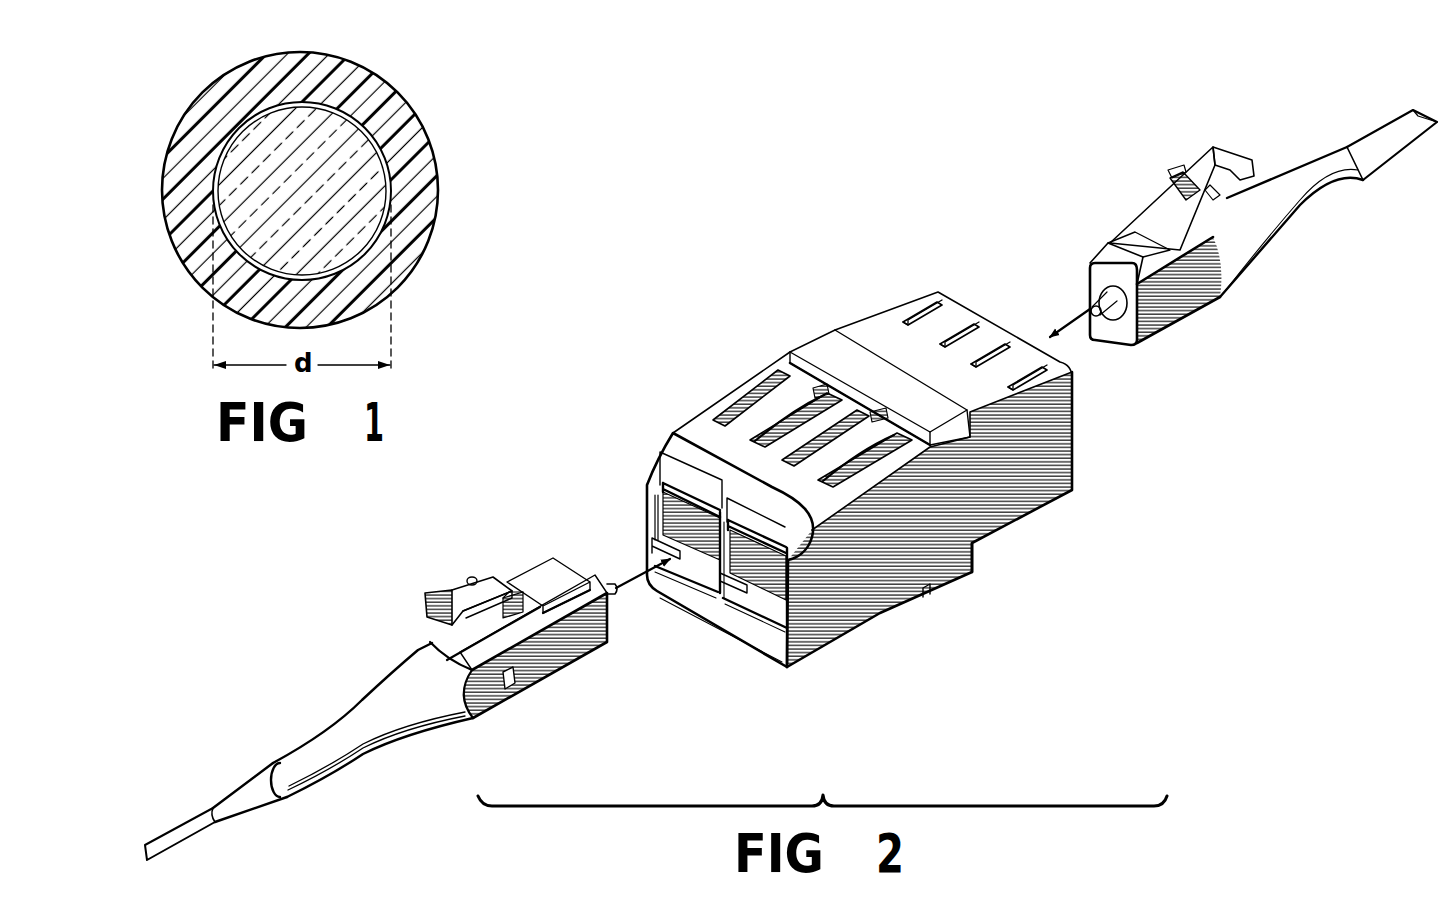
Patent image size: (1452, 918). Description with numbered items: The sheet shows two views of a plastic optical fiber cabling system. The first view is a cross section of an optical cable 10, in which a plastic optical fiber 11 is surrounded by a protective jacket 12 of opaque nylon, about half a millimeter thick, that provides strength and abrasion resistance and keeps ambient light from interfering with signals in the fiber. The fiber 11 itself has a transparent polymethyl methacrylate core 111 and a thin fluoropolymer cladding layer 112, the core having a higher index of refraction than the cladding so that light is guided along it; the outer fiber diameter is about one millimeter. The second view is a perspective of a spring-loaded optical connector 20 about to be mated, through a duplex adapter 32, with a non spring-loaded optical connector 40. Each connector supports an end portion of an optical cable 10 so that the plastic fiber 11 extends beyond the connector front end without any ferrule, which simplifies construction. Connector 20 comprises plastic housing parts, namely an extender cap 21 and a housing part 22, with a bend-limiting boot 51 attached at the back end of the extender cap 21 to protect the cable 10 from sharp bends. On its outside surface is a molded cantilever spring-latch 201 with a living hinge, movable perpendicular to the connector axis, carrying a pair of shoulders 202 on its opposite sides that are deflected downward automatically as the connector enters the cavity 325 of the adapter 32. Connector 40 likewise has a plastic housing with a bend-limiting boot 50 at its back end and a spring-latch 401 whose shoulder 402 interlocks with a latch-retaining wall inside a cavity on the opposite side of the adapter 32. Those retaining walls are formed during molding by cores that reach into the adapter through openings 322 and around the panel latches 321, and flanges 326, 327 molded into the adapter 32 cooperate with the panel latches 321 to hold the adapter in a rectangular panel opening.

In FIG. 1, the optical cable 10 is at (305, 177).
In FIG. 2, the optical cable 10 is at (1388, 124).
In FIG. 1, the plastic optical fiber 11 is at (314, 168).
In FIG. 2, the plastic optical fiber 11 is at (185, 826).
In FIG. 1, the protective jacket 12 is at (184, 168).
In FIG. 1, the transparent core 111 is at (336, 142).
In FIG. 1, the cladding layer 112 is at (398, 122).
In FIG. 2, the spring-loaded optical connector 20 is at (513, 660).
In FIG. 2, the extender cap 21 is at (474, 720).
In FIG. 2, the housing part 22 is at (574, 668).
In FIG. 2, the spring-latch 201 is at (424, 601).
In FIG. 2, the shoulders 202 is at (470, 578).
In FIG. 2, the duplex adapter 32 is at (827, 447).
In FIG. 2, the panel latches 321 is at (840, 447).
In FIG. 2, the openings 322 is at (990, 348).
In FIG. 2, the cavity 325 is at (660, 526).
In FIG. 2, the flange 326 is at (796, 350).
In FIG. 2, the flange 327 is at (958, 578).
In FIG. 2, the non spring-loaded optical connector 40 is at (1147, 230).
In FIG. 2, the spring-latch 401 is at (1220, 148).
In FIG. 2, the shoulder 402 is at (1172, 176).
In FIG. 2, the bend-limiting boot 50 is at (1318, 162).
In FIG. 2, the bend-limiting boot 51 is at (367, 706).